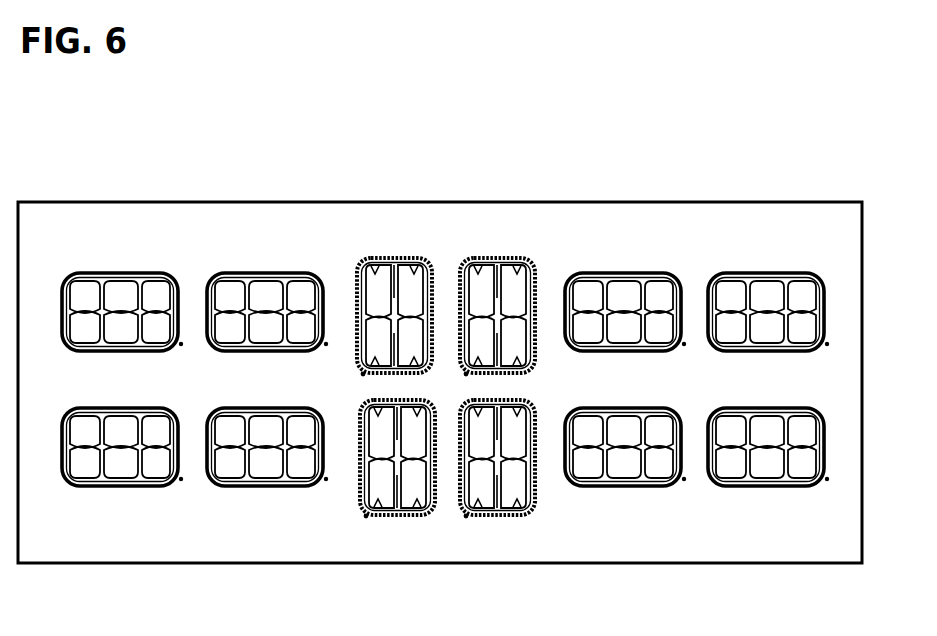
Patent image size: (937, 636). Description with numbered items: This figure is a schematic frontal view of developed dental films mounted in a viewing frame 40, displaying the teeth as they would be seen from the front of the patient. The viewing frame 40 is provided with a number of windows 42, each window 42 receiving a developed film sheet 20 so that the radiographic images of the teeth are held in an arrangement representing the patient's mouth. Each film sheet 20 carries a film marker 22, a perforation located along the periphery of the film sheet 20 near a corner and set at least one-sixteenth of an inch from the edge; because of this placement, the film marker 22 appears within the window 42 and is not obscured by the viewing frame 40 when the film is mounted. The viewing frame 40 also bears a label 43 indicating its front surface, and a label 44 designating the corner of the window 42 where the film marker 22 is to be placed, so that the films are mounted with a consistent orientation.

The viewing frame 40 is at (744, 202).
The window 42 is at (243, 273).
The label 43 is at (428, 236).
The film sheet 20 is at (283, 487).
The label 44 is at (365, 517).
The film marker 22 is at (467, 513).